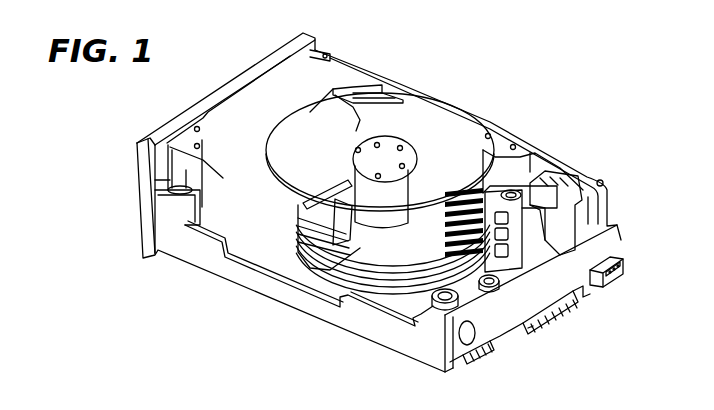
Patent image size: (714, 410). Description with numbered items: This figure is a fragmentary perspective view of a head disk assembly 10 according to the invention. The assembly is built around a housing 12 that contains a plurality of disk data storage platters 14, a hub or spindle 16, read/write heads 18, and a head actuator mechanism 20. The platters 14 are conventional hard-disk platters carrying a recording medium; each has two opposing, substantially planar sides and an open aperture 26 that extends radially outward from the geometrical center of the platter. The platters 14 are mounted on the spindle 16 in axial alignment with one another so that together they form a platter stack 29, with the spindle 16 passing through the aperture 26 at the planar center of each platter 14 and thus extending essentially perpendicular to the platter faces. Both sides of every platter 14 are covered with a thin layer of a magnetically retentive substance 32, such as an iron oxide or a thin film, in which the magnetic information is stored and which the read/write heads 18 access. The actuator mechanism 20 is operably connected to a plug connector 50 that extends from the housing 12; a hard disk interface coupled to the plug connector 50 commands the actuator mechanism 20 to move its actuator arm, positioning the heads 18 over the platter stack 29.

The head disk assembly 10 is at (518, 80).
The housing 12 is at (198, 255).
The disk data storage platters 14 is at (428, 120).
The spindle 16 is at (398, 214).
The read/write heads 18 is at (411, 229).
The head actuator mechanism 20 is at (534, 188).
The aperture 26 is at (369, 218).
The platter stack 29 is at (372, 112).
The magnetically retentive substance 32 is at (435, 164).
The plug connector 50 is at (583, 304).